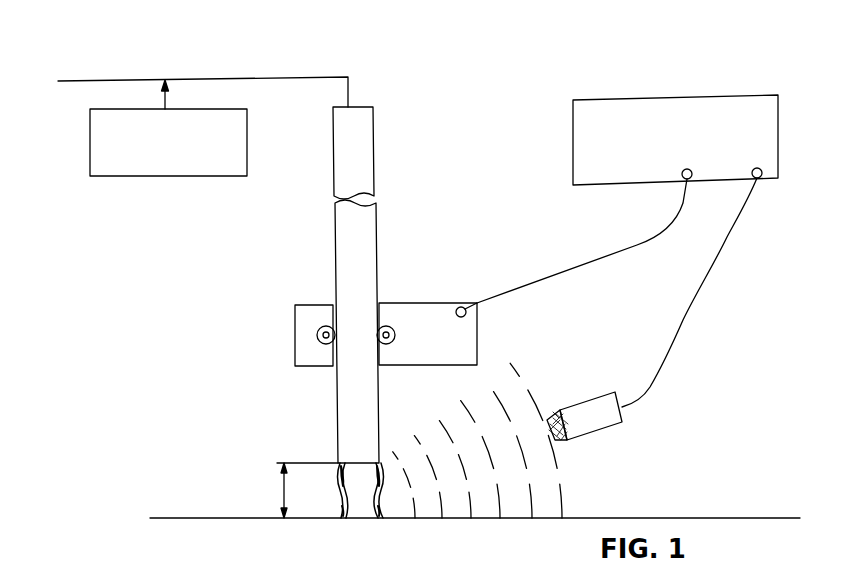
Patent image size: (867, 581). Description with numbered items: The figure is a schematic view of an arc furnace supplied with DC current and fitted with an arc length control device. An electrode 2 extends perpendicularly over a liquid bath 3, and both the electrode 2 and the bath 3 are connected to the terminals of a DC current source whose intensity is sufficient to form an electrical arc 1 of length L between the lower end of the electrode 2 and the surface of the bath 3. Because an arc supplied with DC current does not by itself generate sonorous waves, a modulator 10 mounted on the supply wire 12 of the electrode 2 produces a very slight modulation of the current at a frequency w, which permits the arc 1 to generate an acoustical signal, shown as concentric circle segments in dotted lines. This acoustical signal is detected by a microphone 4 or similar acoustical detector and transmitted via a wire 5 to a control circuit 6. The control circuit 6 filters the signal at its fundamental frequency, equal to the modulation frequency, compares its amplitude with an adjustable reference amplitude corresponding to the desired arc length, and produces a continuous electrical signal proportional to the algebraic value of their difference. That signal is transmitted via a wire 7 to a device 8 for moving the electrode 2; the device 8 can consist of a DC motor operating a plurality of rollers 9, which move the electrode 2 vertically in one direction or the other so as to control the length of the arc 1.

The electrical arc 1 is at (360, 506).
The electrode 2 is at (371, 411).
The liquid bath 3 is at (572, 517).
The microphone 4 is at (598, 425).
The wire 5 is at (690, 316).
The control circuit 6 is at (695, 96).
The wire 7 is at (590, 262).
The device for moving the electrode 8 is at (478, 330).
The rollers 9 is at (381, 347).
The modulator 10 is at (150, 177).
The supply wire 12 is at (265, 78).